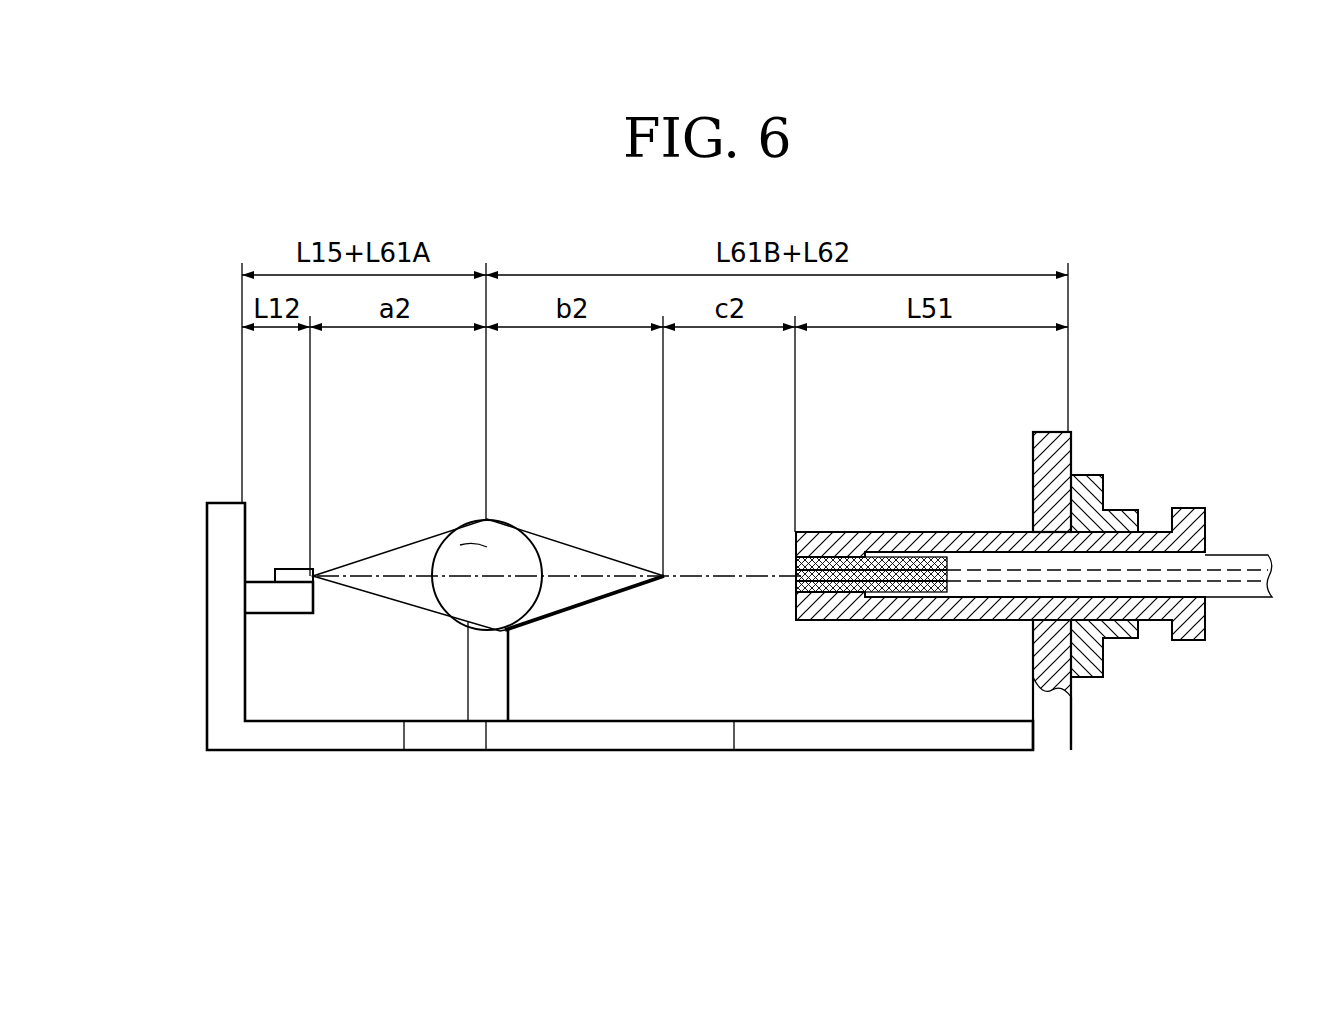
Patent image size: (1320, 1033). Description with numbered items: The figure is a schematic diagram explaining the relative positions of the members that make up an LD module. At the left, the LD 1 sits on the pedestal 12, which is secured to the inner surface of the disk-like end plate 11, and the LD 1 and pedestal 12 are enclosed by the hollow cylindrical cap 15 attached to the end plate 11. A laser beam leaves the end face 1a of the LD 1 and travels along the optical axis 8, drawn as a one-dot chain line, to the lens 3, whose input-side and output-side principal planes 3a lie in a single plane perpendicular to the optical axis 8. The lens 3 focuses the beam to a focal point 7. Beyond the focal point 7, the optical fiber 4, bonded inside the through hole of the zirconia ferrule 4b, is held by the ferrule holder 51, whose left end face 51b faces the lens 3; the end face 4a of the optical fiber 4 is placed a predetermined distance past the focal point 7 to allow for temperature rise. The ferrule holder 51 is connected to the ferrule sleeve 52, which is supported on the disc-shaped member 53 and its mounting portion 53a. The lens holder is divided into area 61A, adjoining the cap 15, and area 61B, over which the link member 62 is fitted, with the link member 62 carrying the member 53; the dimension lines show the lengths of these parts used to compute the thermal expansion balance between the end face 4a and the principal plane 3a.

The LD 1 is at (294, 572).
The end face 1a is at (315, 578).
The lens 3 is at (464, 548).
The principal plane 3a is at (488, 547).
The optical fiber 4 is at (838, 584).
The end face 4a is at (792, 578).
The ferrule 4b is at (908, 565).
The focal point 7 is at (667, 579).
The optical axis 8 is at (595, 600).
The end plate 11 is at (208, 562).
The pedestal 12 is at (263, 580).
The cap 15 is at (316, 752).
The ferrule holder 51 is at (1152, 527).
The sleeve end face 51b is at (794, 540).
The ferrule sleeve 52 is at (1115, 507).
The disc-shaped member 53 is at (1045, 430).
The flange mounting portion 53a is at (1073, 720).
The lens holder base 61A is at (450, 752).
The intermediate base 61B is at (627, 752).
The link member 62 is at (905, 752).